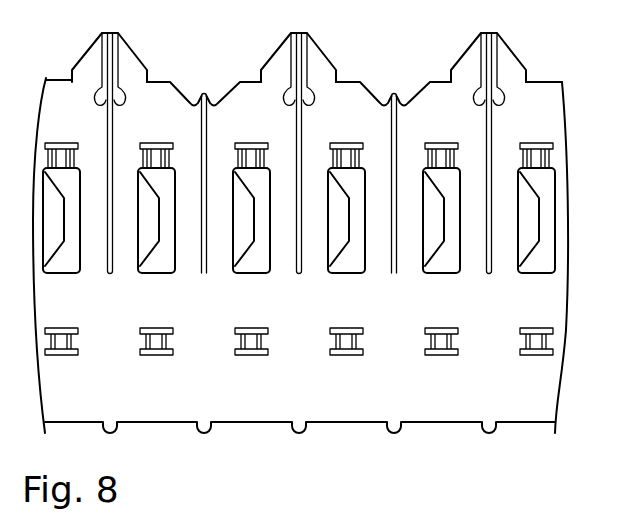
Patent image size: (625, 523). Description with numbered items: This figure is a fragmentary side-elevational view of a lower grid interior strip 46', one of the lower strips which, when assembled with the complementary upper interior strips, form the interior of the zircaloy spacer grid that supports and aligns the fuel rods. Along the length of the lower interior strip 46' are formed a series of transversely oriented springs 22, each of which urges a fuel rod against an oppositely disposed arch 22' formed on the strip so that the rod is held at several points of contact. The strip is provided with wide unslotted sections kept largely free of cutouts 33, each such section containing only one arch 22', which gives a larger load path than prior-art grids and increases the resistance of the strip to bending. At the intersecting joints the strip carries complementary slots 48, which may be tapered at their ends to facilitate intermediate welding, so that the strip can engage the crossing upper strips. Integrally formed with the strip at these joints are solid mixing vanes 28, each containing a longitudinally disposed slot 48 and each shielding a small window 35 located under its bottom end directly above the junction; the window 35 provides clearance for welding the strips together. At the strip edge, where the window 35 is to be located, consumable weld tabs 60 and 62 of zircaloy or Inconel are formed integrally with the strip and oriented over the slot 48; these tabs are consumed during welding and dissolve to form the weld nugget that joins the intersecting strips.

The mixing vane 28 is at (120, 50).
The cutout 33 is at (165, 178).
The consumable weld tab 60 is at (392, 98).
The spring 22 is at (299, 220).
The arch 22' is at (370, 260).
The window 35 is at (480, 102).
The slot 48 is at (492, 232).
The lower interior strip 46' is at (300, 233).
The consumable weld tab 62 is at (293, 429).